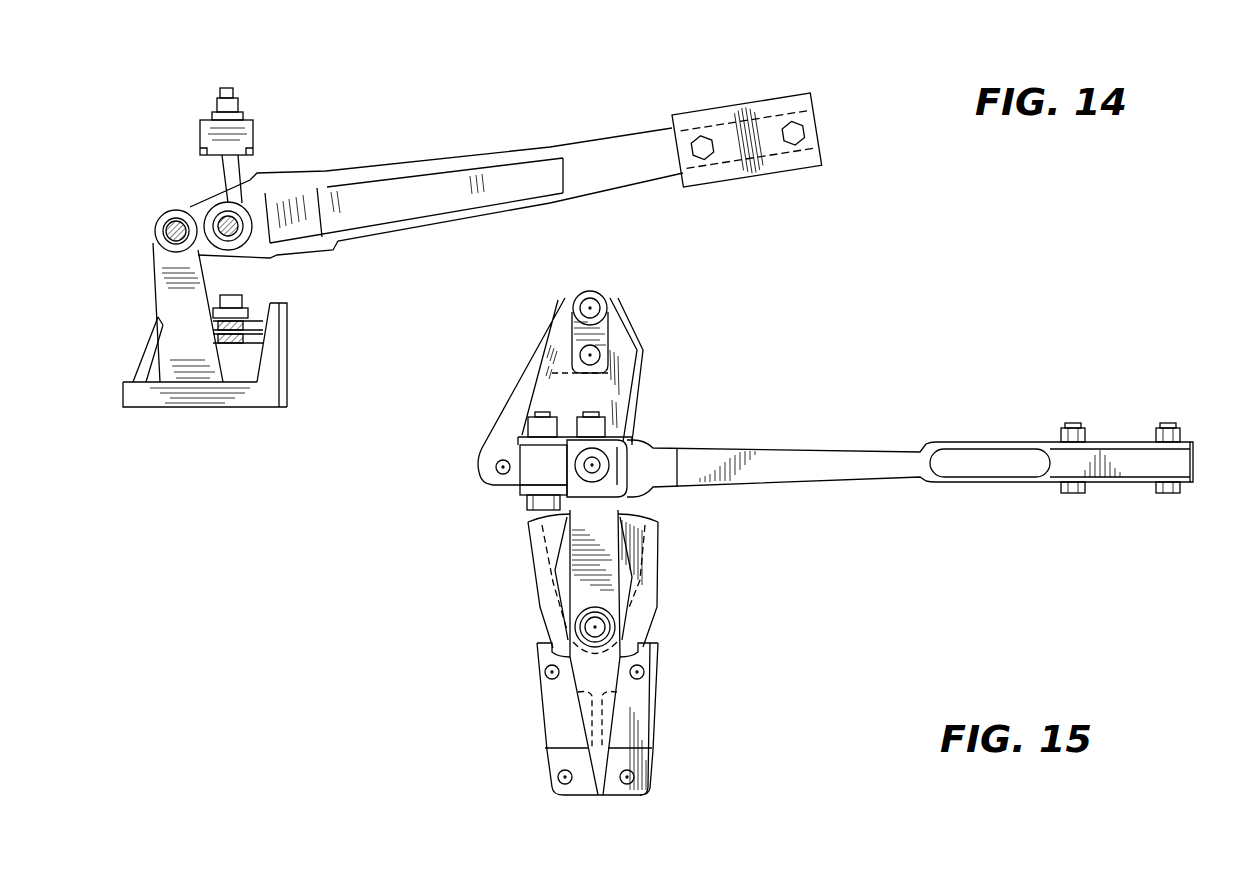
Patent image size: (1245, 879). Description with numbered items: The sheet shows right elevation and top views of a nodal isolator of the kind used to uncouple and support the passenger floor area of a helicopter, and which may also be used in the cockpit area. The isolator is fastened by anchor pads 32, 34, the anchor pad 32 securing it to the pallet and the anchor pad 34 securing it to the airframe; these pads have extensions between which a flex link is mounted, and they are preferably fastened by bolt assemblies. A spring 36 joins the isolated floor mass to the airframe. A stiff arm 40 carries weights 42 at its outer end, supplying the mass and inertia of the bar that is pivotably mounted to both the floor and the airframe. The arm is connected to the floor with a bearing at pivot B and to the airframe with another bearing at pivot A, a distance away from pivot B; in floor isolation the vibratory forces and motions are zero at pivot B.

In FIG. 15, the anchor pad 32 is at (612, 393).
In FIG. 14, the anchor pad 34 is at (177, 287).
In FIG. 15, the anchor pad 34 is at (643, 717).
In FIG. 14, the spring 36 is at (245, 338).
In FIG. 14, the arm 40 is at (640, 145).
In FIG. 15, the arm 40 is at (872, 452).
In FIG. 14, the weights 42 is at (765, 113).
In FIG. 15, the weights 42 is at (1103, 440).
In FIG. 14, the pivot A is at (262, 216).
In FIG. 14, the pivot B is at (172, 222).